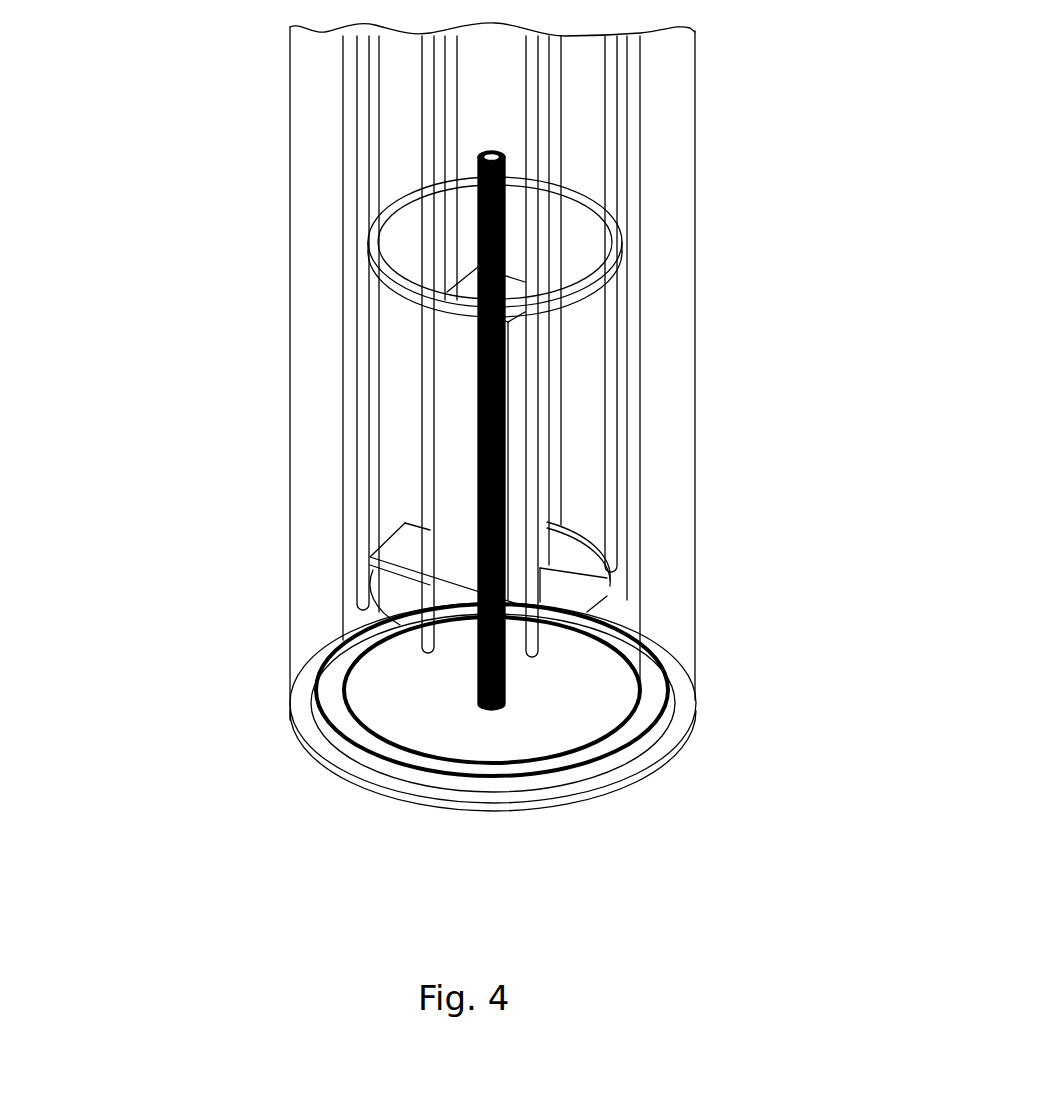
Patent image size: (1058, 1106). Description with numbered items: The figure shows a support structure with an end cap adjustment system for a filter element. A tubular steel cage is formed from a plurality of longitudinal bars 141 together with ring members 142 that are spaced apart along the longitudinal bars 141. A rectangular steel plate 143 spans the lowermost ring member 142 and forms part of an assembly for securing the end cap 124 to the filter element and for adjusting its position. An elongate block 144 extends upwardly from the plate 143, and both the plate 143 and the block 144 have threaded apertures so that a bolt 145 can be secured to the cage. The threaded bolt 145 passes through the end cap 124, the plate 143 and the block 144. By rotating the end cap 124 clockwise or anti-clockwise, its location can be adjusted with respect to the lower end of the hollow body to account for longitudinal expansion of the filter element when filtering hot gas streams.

The end cap 124 is at (605, 770).
The longitudinal bars 141 is at (613, 477).
The ring members 142 is at (593, 284).
The rectangular steel plate 143 is at (398, 552).
The elongate block 144 is at (460, 372).
The bolt 145 is at (507, 220).